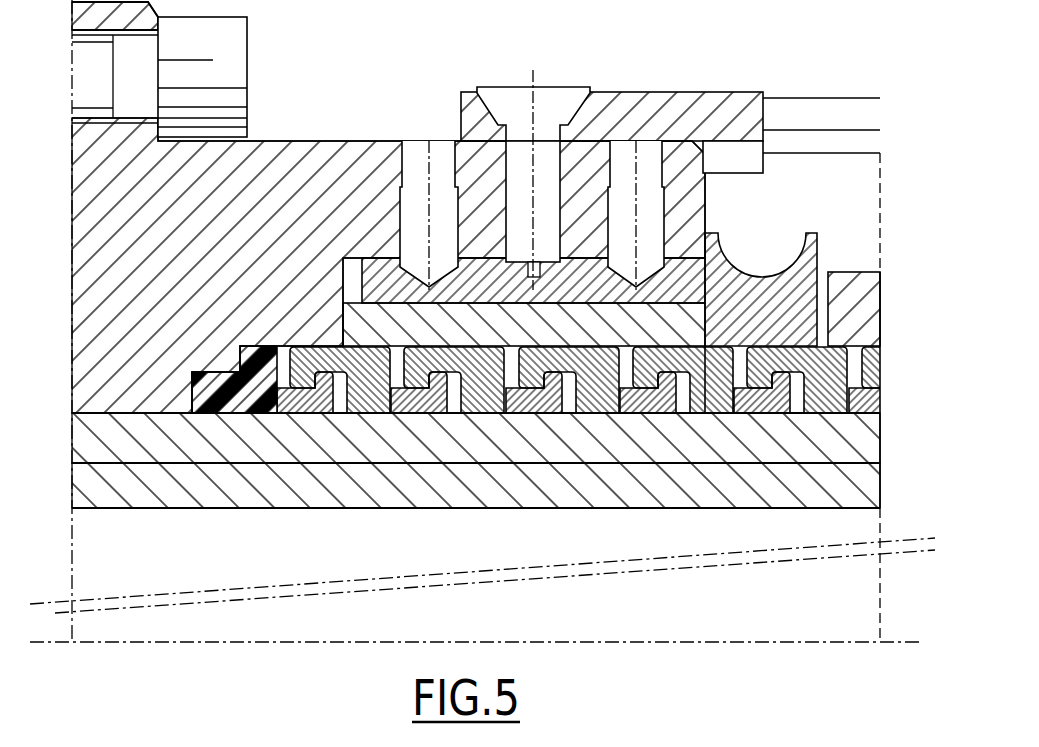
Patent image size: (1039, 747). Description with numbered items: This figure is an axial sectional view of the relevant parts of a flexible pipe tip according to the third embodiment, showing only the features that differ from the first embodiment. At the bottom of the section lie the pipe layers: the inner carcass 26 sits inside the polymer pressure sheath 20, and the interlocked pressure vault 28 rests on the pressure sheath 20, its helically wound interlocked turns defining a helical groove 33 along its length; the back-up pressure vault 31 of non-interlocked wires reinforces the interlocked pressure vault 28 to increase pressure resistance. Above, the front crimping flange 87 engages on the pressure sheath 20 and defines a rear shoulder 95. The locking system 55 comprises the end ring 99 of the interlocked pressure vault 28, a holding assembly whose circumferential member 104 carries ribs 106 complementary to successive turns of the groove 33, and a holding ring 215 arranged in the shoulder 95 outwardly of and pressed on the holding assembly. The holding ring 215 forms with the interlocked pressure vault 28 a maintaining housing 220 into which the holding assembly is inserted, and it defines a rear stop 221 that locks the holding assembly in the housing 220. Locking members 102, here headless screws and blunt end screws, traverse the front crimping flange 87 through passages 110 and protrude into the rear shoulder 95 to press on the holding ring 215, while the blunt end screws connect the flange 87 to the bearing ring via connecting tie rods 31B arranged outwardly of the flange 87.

The pressure sheath 20 is at (845, 440).
The inner carcass 26 is at (817, 490).
The interlocked pressure vault 28 is at (850, 400).
The back-up pressure vault 31 is at (857, 318).
The connecting tie rods 31B is at (730, 127).
The helical groove 33 is at (398, 395).
The locking system 55 is at (701, 368).
The front crimping flange 87 is at (288, 187).
The rear shoulder 95 is at (320, 300).
The end ring 99 is at (255, 350).
The locking members 102 is at (423, 208).
The circumferential member 104 is at (480, 345).
The ribs 106 is at (376, 380).
The passages 110 is at (418, 145).
The holding ring 215 is at (817, 253).
The maintaining housing 220 is at (347, 348).
The rear stop 221 is at (707, 328).